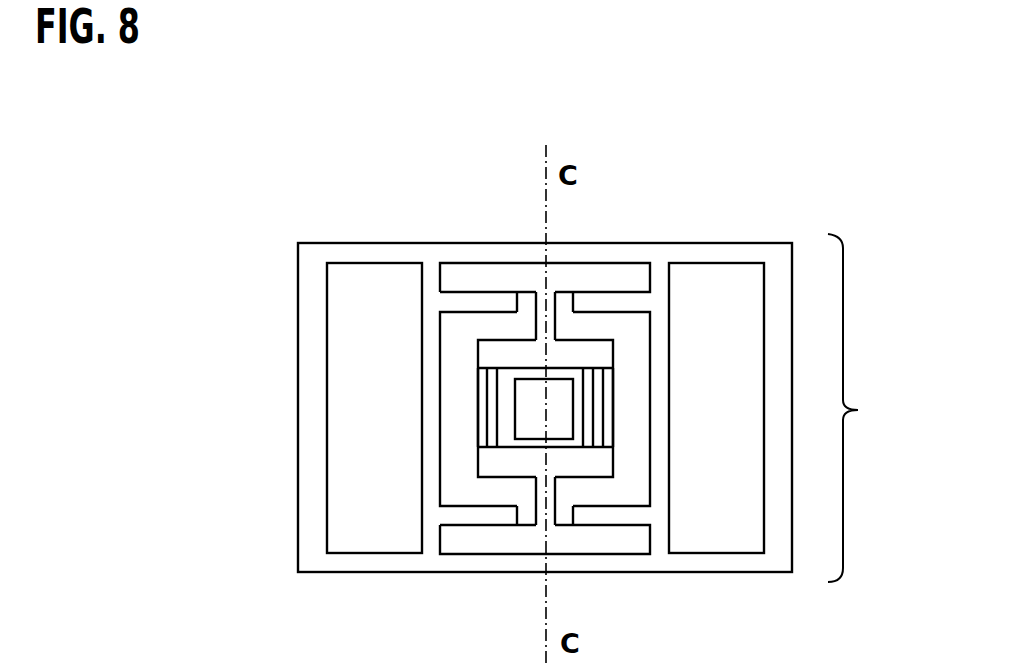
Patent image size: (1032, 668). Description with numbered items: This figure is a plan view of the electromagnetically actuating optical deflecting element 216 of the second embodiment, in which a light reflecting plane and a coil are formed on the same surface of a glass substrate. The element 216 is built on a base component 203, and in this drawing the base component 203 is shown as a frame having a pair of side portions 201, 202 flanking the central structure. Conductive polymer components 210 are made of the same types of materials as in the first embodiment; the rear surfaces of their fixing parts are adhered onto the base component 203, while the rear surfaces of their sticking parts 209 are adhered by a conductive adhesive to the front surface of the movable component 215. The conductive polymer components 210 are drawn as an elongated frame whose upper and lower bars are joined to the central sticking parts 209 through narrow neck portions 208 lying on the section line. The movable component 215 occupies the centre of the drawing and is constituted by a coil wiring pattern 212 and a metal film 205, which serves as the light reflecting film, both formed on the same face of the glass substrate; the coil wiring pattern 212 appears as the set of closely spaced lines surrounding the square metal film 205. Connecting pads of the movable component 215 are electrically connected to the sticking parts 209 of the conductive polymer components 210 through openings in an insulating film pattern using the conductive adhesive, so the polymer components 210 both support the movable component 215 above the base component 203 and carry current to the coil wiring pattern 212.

The first electrode 201 is at (365, 262).
The second electrode / frame 202 is at (298, 310).
The base component 203 is at (145, 165).
The metal film 205 is at (515, 417).
The connecting neck 208 is at (535, 330).
The sticking parts 209 is at (615, 460).
The conductive polymer components 210 is at (593, 262).
The coil wiring pattern 212 is at (487, 409).
The movable component 215 is at (478, 388).
The electromagnetically actuating optical deflecting element 216 is at (876, 408).